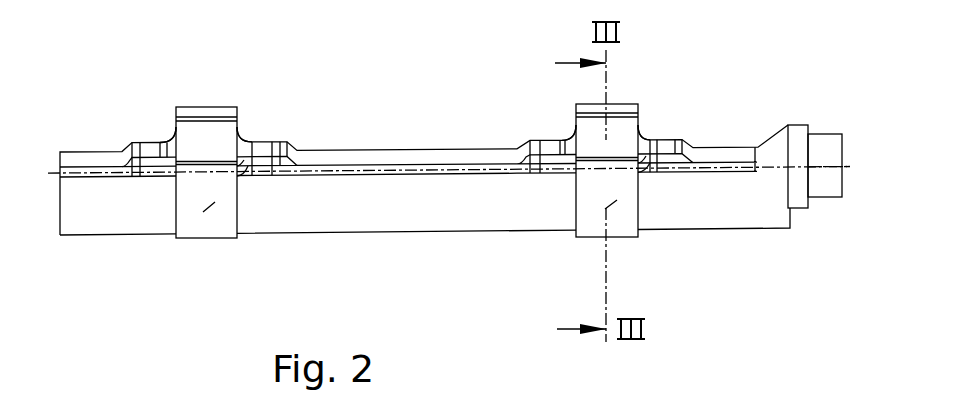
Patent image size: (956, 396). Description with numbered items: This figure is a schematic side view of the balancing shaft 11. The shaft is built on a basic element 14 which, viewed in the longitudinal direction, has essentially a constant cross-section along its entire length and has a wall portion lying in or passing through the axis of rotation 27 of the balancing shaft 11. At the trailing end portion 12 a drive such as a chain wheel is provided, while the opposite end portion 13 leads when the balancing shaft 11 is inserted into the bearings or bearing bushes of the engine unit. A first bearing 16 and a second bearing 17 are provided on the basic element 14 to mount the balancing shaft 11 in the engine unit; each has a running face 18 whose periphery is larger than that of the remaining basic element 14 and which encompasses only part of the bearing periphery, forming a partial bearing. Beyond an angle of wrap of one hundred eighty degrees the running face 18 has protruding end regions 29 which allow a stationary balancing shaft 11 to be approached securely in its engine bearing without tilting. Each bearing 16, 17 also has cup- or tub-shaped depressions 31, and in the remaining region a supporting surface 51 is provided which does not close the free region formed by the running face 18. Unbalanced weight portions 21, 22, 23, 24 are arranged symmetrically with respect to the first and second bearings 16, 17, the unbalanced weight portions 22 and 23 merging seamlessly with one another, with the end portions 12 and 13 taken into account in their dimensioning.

The balancing shaft 11 is at (433, 120).
The trailing end portion 12 is at (831, 120).
The end portion 13 is at (83, 133).
The basic element 14 is at (430, 246).
The first bearing 16 is at (206, 252).
The second bearing 17 is at (586, 249).
The running face 18 is at (215, 202).
The unbalanced weight portion 21 is at (131, 244).
The unbalanced weight portion 22 is at (304, 246).
The unbalanced weight portion 23 is at (500, 245).
The unbalanced weight portion 24 is at (710, 240).
The axis of rotation 27 is at (823, 168).
The end regions 29 is at (218, 158).
The depressions 31 is at (195, 130).
The supporting surface 51 is at (204, 106).